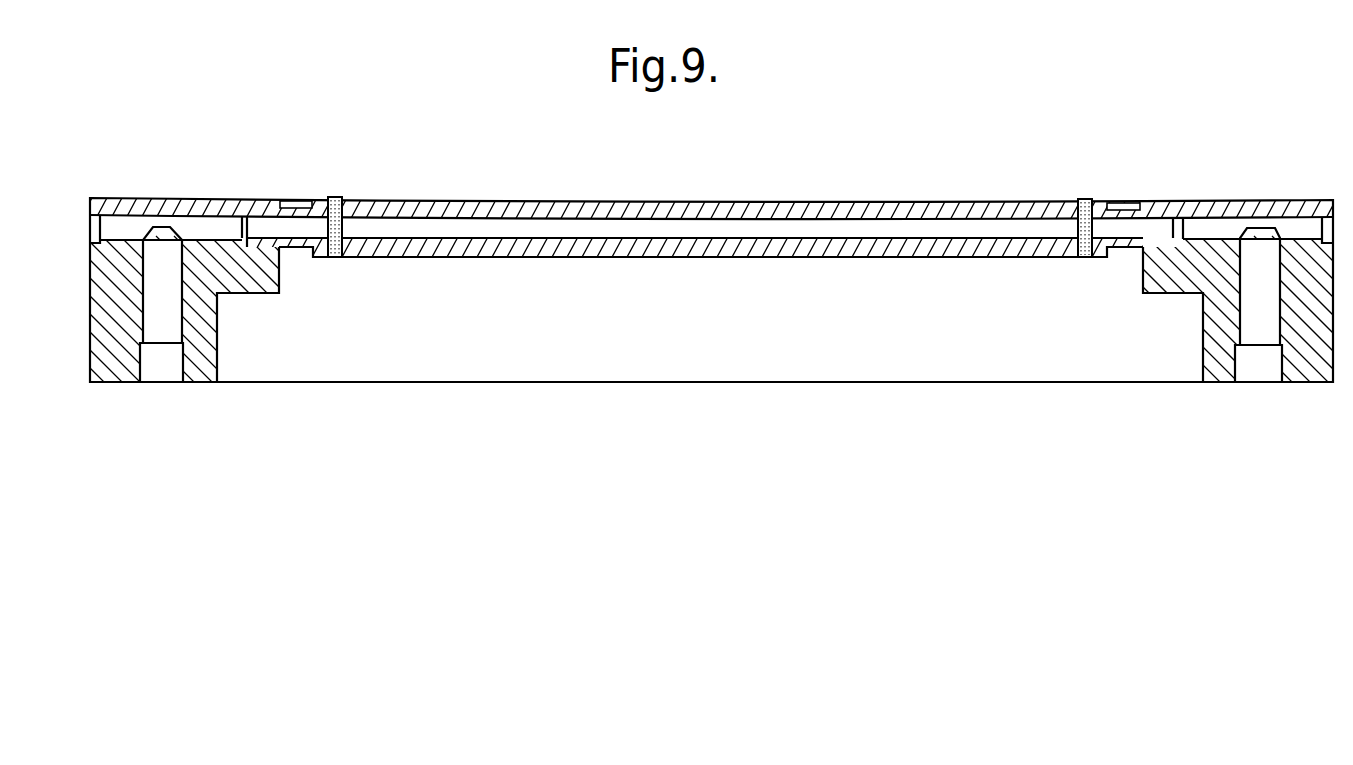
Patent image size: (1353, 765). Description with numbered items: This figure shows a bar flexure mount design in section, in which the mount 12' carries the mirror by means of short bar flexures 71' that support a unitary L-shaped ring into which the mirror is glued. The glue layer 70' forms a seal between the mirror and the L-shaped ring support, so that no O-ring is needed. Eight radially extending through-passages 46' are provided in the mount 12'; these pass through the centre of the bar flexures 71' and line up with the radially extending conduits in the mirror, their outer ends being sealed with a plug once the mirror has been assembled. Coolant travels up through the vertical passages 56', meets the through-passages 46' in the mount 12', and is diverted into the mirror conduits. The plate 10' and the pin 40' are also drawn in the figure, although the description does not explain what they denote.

The housing body 12' is at (676, 291).
The plate 10' is at (715, 195).
The pin 40' is at (349, 201).
The pin 70' is at (1069, 194).
The recess 71' is at (1130, 171).
The plunger pin 46' is at (1255, 243).
The pin foot 56' is at (1257, 385).